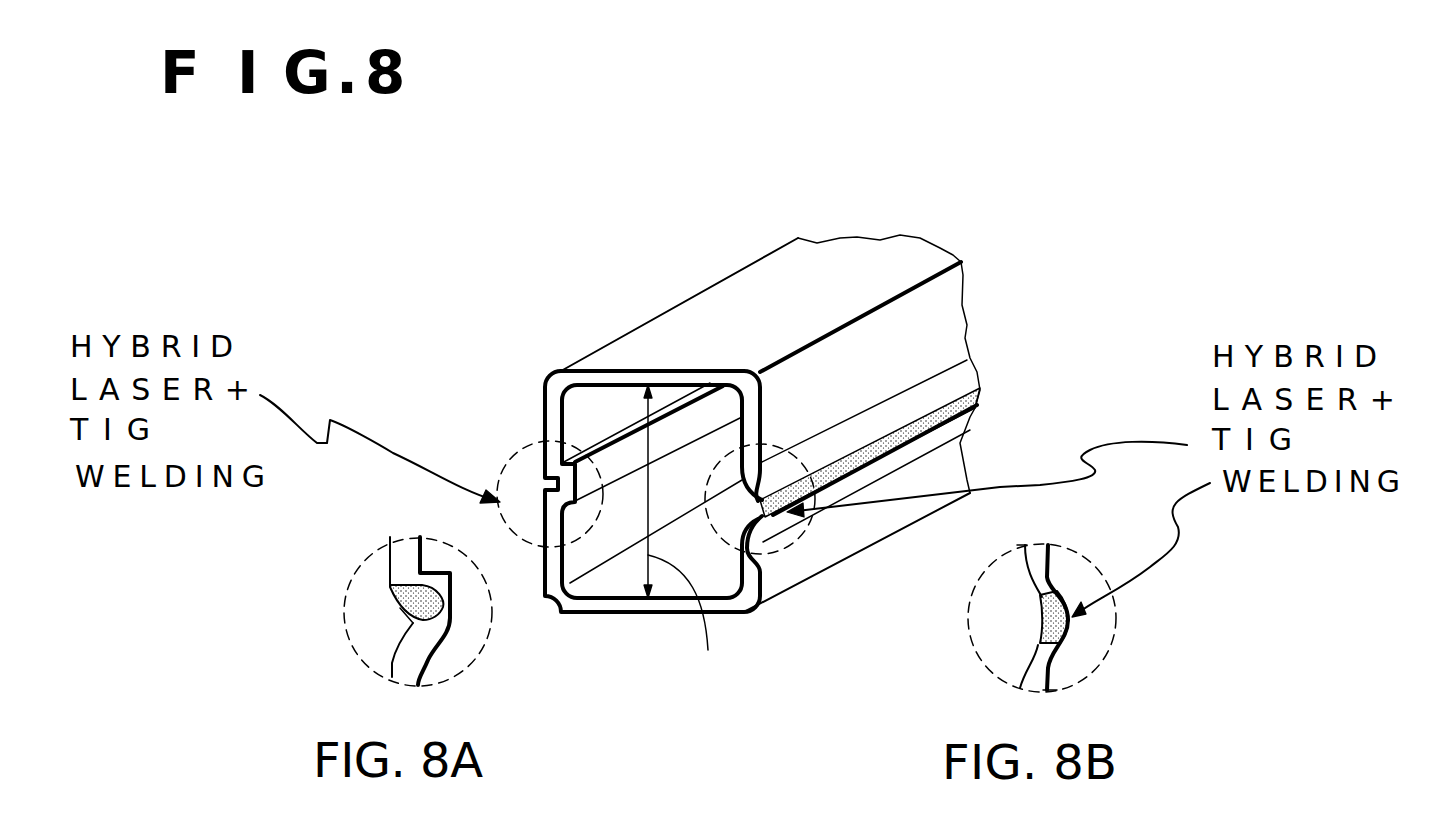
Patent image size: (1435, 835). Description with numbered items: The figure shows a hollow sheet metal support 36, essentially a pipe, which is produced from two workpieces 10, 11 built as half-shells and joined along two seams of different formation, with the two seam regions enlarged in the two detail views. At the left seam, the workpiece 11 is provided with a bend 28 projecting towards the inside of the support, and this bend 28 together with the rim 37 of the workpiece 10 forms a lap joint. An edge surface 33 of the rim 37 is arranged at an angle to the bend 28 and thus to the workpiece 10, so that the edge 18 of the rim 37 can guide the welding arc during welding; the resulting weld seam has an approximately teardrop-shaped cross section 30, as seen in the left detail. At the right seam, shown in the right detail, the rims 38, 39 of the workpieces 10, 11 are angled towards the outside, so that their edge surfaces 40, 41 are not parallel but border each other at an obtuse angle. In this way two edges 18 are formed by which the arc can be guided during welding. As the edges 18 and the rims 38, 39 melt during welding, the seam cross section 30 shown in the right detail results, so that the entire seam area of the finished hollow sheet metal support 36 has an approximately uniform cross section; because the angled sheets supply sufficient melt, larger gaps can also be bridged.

In FIG. 8, the workpiece 10 is at (785, 319).
In FIG. 8, the workpiece 11 is at (990, 447).
In FIG. 8, the edge 18 is at (768, 500).
In FIG. 8A, the edge 18 is at (390, 585).
In FIG. 8A, the bend 28 is at (420, 647).
In FIG. 8A, the seam cross section 30 is at (413, 602).
In FIG. 8B, the seam cross section 30 is at (1072, 627).
In FIG. 8, the edge surface 33 is at (550, 483).
In FIG. 8, the hollow sheet metal support 36 is at (938, 300).
In FIG. 8, the rim 37 is at (560, 462).
In FIG. 8B, the rim 38 is at (1047, 573).
In FIG. 8B, the rim 39 is at (1050, 663).
In FIG. 8B, the edge surface 40 is at (1040, 596).
In FIG. 8B, the edge surface 41 is at (1040, 630).